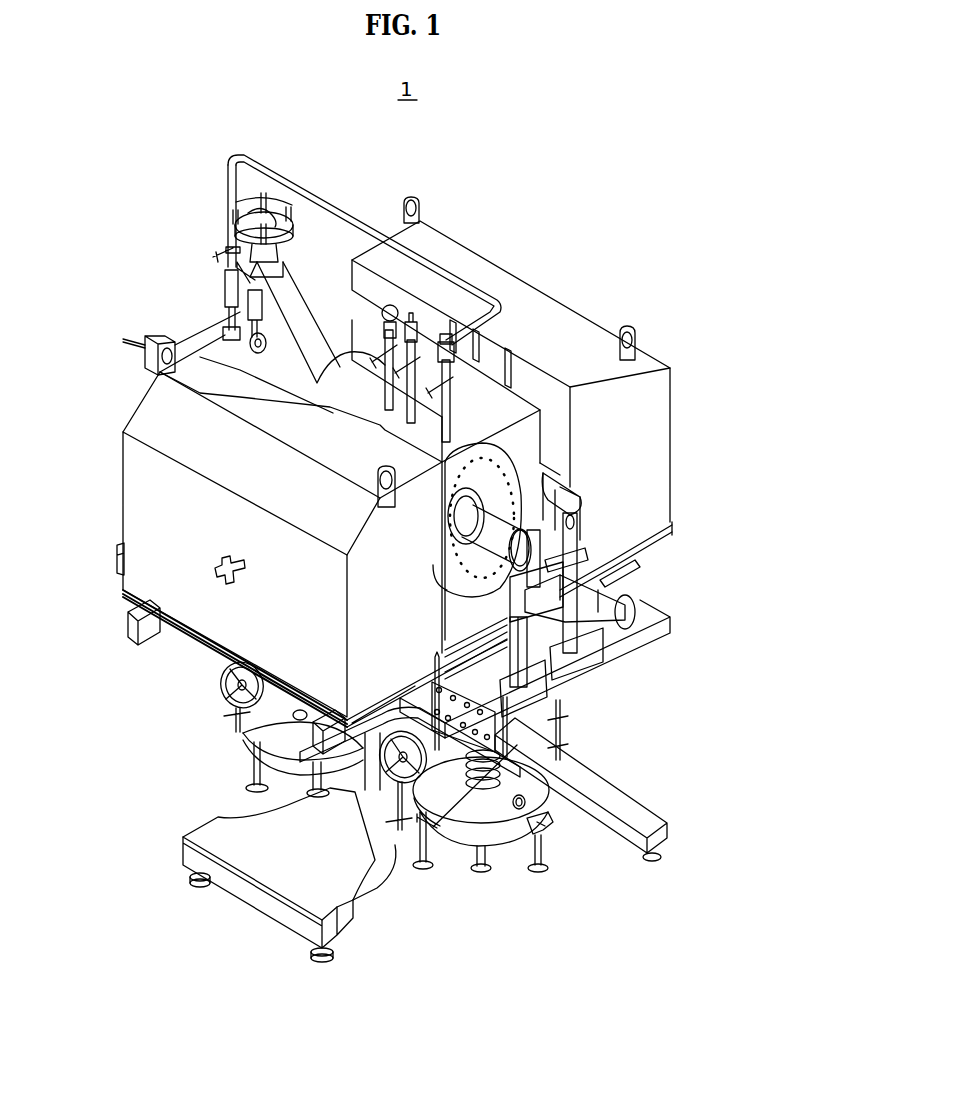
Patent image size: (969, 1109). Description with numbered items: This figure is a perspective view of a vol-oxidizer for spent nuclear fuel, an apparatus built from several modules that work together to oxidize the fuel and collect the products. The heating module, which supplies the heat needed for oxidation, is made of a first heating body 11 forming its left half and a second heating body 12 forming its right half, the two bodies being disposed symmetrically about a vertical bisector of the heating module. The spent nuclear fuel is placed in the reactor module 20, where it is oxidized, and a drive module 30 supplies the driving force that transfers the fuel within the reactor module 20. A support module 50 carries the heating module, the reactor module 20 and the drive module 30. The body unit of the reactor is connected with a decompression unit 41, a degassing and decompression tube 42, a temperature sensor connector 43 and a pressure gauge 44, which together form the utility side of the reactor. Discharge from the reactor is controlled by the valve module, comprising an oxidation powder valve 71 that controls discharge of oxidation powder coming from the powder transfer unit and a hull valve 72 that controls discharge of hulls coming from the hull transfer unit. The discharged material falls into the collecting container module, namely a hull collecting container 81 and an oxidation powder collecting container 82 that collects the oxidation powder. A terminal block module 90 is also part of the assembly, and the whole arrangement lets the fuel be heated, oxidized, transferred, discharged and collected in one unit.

The first heating body 11 is at (127, 471).
The second heating body 12 is at (487, 267).
The reactor module 20 is at (524, 449).
The drive module 30 is at (598, 600).
The decompression unit 41 is at (450, 403).
The degassing and decompression tube 42 is at (318, 192).
The temperature sensor connector 43 is at (412, 367).
The pressure gauge 44 is at (317, 383).
The support module 50 is at (640, 650).
The oxidation powder valve 71 is at (405, 797).
The hull valve 72 is at (223, 678).
The hull collecting container 81 is at (262, 732).
The oxidation powder collecting container 82 is at (503, 835).
The terminal block module 90 is at (515, 718).